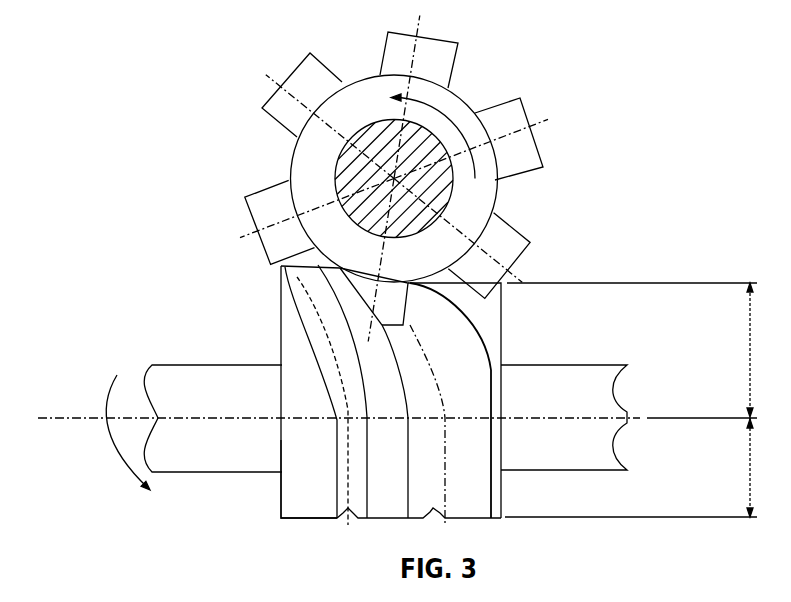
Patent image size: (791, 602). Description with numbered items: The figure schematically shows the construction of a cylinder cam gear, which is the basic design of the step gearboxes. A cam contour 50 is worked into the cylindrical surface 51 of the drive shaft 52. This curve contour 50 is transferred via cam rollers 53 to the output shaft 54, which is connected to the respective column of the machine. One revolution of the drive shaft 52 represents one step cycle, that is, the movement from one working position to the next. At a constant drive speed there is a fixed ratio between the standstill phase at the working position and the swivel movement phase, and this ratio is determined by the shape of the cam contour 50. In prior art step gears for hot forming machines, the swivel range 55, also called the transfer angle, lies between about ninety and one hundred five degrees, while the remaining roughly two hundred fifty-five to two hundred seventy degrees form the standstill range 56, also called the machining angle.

The cam contour 50 is at (423, 350).
The cylindrical surface 51 is at (297, 495).
The drive shaft 52 is at (217, 457).
The cam rollers 53 is at (535, 152).
The output shaft 54 is at (333, 168).
The swivel range 55 is at (629, 350).
The standstill range 56 is at (629, 467).